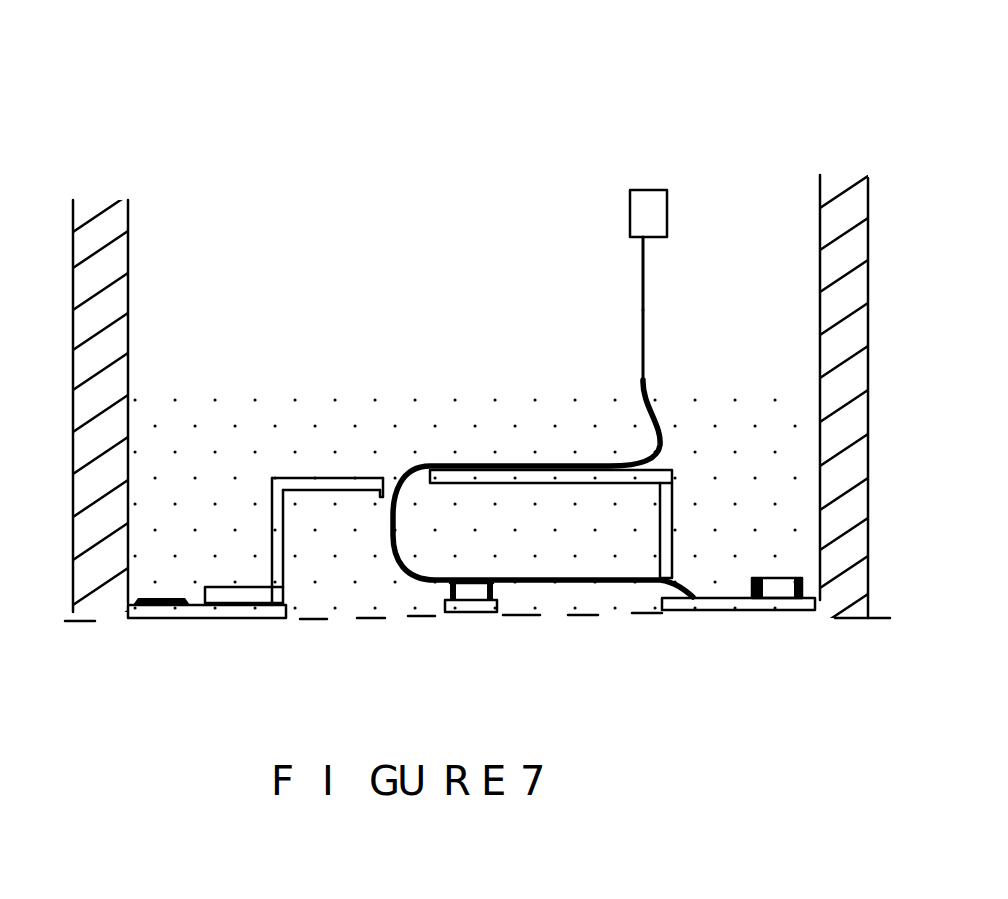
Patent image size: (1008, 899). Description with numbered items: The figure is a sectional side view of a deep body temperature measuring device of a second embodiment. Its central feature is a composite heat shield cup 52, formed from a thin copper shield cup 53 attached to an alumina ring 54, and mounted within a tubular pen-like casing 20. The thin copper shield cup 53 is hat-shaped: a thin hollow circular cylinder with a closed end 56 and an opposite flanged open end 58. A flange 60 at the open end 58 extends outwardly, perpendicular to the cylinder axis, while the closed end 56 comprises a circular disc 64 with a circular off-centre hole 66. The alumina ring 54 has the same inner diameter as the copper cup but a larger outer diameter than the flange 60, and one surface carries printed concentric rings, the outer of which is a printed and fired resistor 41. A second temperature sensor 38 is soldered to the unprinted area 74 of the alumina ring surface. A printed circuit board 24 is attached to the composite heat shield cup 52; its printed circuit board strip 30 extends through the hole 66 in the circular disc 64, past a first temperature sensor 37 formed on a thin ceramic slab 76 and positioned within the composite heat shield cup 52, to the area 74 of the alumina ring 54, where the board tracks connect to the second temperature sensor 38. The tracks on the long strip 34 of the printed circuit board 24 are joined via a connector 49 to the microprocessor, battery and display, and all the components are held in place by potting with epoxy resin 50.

The tubular pen-like casing 20 is at (820, 188).
The printed circuit board 24 is at (642, 383).
The printed circuit board strip 30 is at (393, 543).
The long strip 34 is at (640, 297).
The first temperature sensor 37 is at (495, 597).
The second temperature sensor 38 is at (803, 603).
The printed and fired resistor 41 is at (125, 618).
The connector 49 is at (640, 207).
The epoxy resin 50 is at (313, 538).
The composite heat shield cup 52 is at (658, 813).
The thin copper shield cup 53 is at (272, 478).
The alumina ring 54 is at (210, 620).
The closed end 56 is at (308, 480).
The flanged open end 58 is at (332, 592).
The flange 60 is at (244, 588).
The circular disc 64 is at (343, 477).
The circular off-centre hole 66 is at (400, 473).
The unprinted area 74 is at (740, 603).
The thin ceramic slab 76 is at (452, 612).